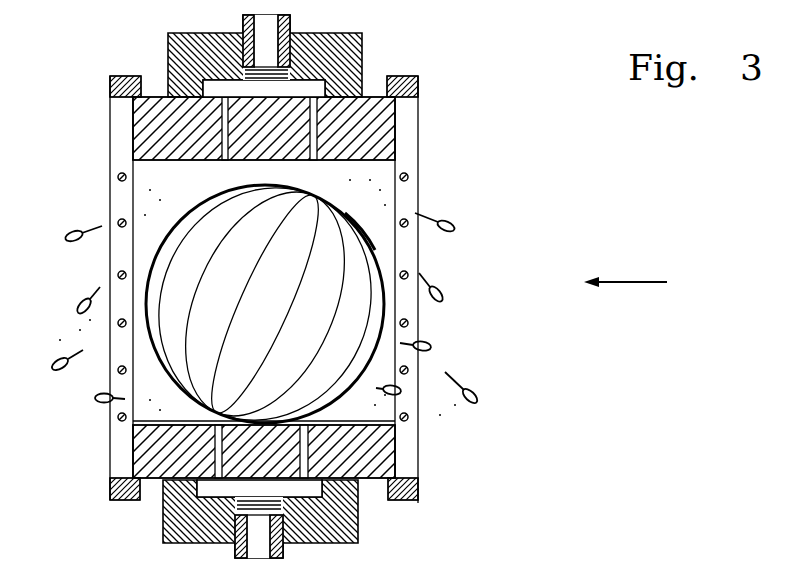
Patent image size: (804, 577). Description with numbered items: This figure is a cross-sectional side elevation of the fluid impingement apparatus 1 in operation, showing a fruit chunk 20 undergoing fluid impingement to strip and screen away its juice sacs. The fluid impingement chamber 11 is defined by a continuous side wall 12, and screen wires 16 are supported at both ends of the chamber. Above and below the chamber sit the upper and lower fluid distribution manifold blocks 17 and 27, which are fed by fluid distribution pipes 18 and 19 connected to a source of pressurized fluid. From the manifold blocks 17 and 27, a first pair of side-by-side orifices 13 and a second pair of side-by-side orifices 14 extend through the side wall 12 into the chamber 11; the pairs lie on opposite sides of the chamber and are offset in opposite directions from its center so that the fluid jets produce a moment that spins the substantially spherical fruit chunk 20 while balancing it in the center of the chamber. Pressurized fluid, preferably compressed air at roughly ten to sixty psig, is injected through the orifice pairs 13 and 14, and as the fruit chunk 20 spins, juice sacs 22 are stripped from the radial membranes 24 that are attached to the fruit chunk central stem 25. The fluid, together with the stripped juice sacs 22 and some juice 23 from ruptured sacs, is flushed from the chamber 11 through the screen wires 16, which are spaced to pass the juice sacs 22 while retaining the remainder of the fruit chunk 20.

The fluid impingement apparatus 1 is at (635, 285).
The fluid impingement chamber 11 is at (150, 165).
The continuous side wall 12 is at (395, 152).
The first pair of side-by-side orifices 13 is at (150, 117).
The second pair of side-by-side orifices 14 is at (145, 455).
The screen wires 16 is at (118, 180).
The upper fluid distribution manifold block 17 is at (172, 60).
The fluid distribution pipe 18 is at (243, 20).
The fluid distribution pipe 19 is at (163, 527).
The fruit chunk 20 is at (385, 304).
The juice sacs 22 is at (133, 255).
The juice 23 is at (78, 328).
The radial membranes 24 is at (365, 242).
The fruit chunk central stem 25 is at (140, 408).
The lower fluid distribution manifold block 27 is at (360, 530).